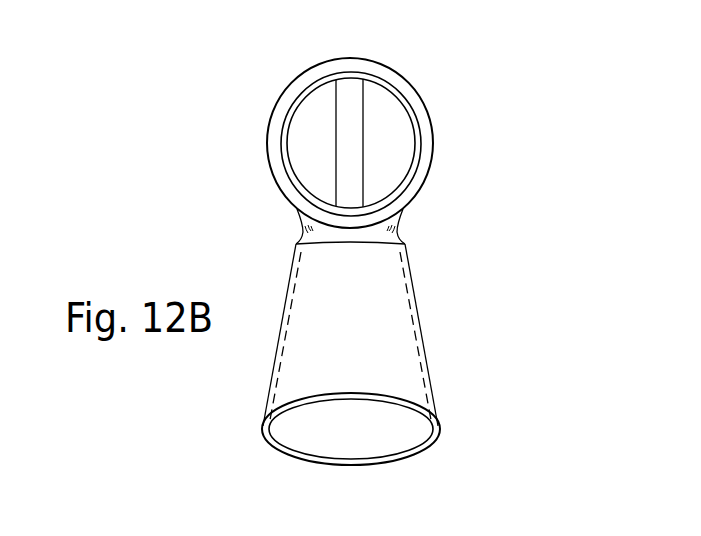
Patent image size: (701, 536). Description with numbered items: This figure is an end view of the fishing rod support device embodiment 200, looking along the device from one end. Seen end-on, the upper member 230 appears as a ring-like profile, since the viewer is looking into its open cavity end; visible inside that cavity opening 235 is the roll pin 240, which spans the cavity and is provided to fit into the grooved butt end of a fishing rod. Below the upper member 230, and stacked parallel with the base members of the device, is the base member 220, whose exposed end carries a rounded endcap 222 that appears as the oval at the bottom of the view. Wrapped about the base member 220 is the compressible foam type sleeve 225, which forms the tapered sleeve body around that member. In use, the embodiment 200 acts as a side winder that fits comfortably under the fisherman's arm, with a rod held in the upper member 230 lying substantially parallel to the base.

The fishing rod support device embodiment 200 is at (350, 264).
The upper member 230 is at (266, 152).
The ring opening 235 is at (390, 130).
The roll pin 240 is at (352, 108).
The compressible foam type sleeve 225 is at (422, 298).
The base member 220 is at (395, 333).
The rounded endcap 222 is at (390, 437).